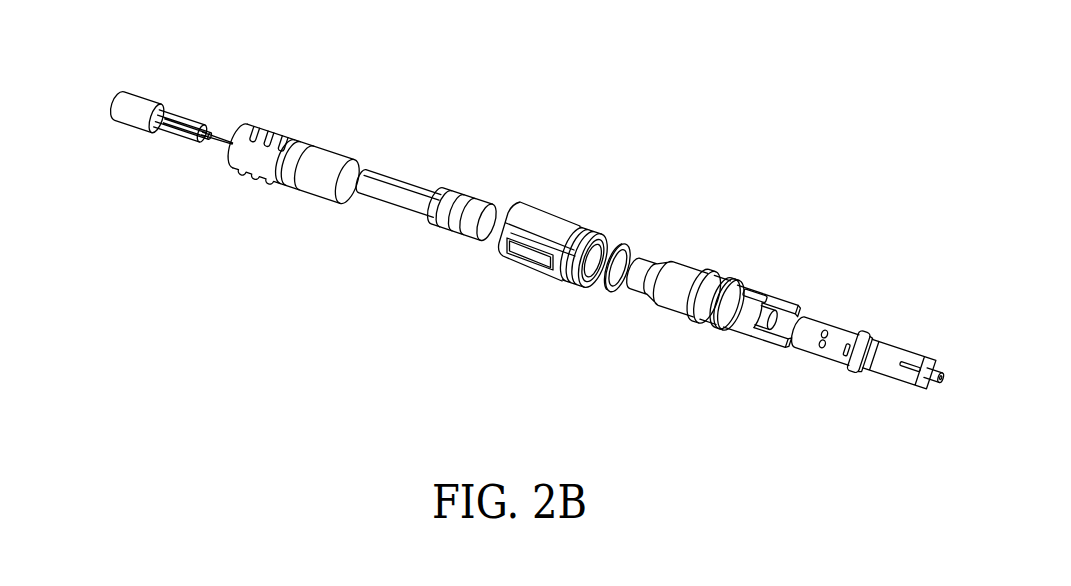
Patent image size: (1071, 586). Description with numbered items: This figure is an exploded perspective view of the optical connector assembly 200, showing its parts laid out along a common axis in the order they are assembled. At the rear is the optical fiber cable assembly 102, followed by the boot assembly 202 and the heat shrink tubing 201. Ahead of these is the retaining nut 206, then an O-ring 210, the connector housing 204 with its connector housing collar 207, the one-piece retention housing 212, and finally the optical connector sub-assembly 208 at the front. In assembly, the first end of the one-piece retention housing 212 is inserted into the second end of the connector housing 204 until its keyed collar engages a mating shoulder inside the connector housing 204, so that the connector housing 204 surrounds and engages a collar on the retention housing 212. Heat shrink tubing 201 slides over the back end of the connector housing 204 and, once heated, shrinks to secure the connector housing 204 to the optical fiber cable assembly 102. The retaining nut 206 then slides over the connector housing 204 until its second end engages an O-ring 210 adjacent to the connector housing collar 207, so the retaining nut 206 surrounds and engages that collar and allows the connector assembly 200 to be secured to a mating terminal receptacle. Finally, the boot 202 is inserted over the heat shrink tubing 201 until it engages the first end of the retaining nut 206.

The optical connector assembly 200 is at (525, 232).
The optical fiber cable assembly 102 is at (176, 152).
The boot assembly 202 is at (291, 193).
The heat shrink tubing 201 is at (436, 228).
The retaining nut 206 is at (550, 283).
The O-rings 210 is at (697, 320).
The connector housing 204 is at (702, 267).
The connector housing collar 207 is at (744, 292).
The one-piece retention housing 212 is at (838, 368).
The optical connector sub-assembly 208 is at (910, 390).